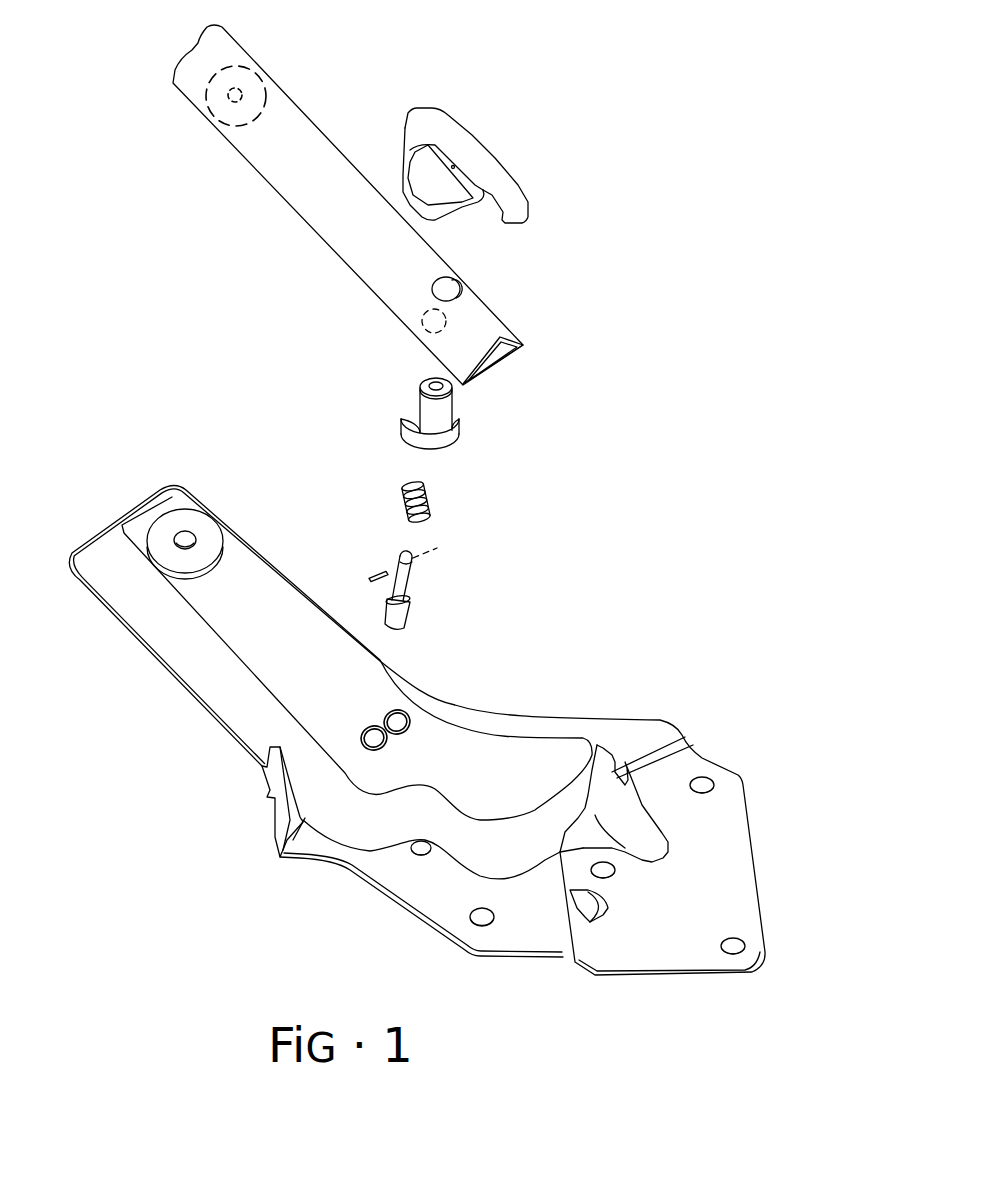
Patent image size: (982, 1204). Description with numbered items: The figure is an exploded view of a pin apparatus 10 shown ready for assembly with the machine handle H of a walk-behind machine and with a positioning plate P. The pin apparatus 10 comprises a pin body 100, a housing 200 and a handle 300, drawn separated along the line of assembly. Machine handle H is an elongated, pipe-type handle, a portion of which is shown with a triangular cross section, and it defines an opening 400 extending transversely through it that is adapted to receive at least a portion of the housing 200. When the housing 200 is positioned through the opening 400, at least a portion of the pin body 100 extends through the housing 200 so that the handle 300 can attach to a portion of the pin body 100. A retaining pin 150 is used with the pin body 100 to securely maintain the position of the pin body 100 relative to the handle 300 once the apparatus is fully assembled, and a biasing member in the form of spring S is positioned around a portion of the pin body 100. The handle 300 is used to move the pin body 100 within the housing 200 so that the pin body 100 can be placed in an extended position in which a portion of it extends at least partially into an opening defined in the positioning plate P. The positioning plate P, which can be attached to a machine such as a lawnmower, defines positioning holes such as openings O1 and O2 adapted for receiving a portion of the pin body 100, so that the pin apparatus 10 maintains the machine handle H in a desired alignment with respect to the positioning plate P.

The pin apparatus 10 is at (597, 523).
The machine handle H is at (283, 197).
The opening 400 is at (458, 284).
The handle 300 is at (560, 136).
The housing 200 is at (502, 430).
The spring S is at (427, 505).
The pin body 100 is at (453, 600).
The retaining pin 150 is at (365, 580).
The opening O1 is at (405, 713).
The opening O2 is at (389, 736).
The positioning plate P is at (175, 683).